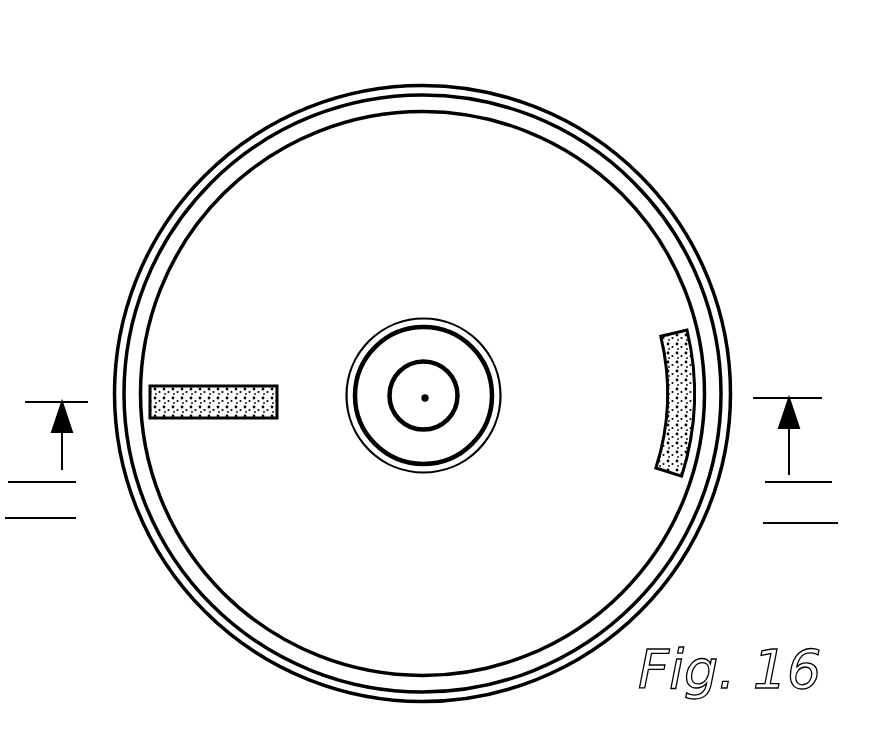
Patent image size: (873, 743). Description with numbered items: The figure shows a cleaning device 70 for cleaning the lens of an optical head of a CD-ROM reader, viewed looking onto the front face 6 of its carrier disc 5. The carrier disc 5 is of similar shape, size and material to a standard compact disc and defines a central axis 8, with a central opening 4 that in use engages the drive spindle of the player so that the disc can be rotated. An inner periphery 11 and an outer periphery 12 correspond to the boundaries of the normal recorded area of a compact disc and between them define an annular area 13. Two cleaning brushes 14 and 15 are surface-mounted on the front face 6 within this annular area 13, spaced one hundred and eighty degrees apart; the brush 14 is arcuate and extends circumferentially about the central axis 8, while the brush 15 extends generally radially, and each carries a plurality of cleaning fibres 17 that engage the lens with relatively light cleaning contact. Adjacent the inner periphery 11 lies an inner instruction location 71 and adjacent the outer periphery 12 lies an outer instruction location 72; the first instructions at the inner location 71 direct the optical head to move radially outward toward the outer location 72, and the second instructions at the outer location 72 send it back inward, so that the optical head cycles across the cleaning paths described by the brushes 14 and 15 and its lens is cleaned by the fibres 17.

The cleaning device 70 is at (636, 122).
The front face 6 is at (272, 180).
The carrier disc 5 is at (660, 278).
The outer periphery 12 is at (485, 102).
The outer instruction location 72 is at (657, 213).
The annular area 13 is at (413, 167).
The inner instruction location 71 is at (497, 382).
The inner periphery 11 is at (470, 432).
The opening 4 is at (428, 362).
The central axis 8 is at (424, 399).
The cleaning fibres 17 is at (210, 398).
The cleaning brush 15 is at (242, 420).
The cleaning brush 14 is at (665, 437).